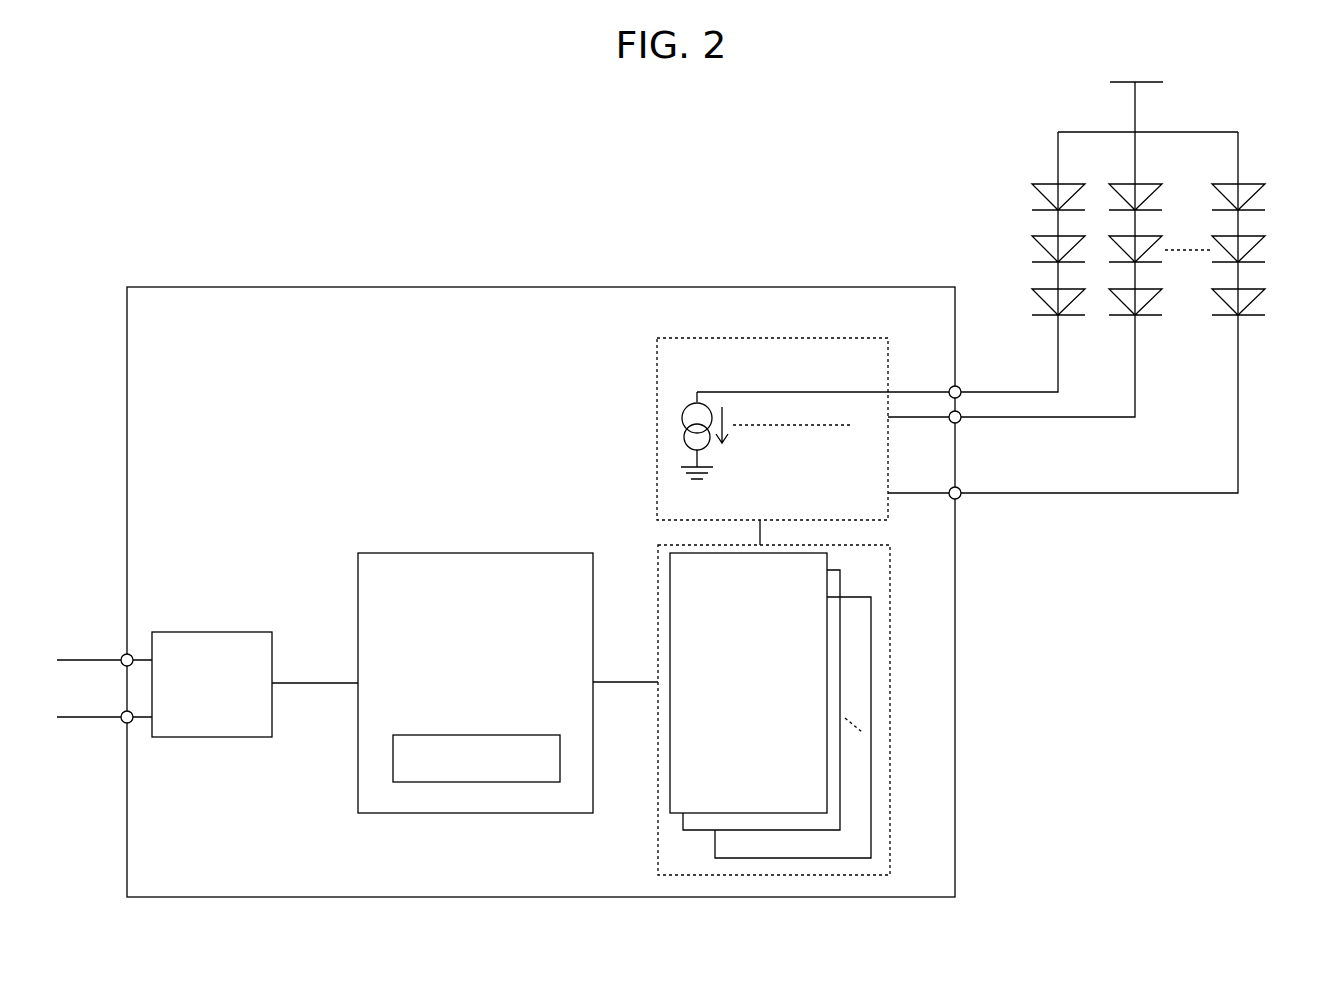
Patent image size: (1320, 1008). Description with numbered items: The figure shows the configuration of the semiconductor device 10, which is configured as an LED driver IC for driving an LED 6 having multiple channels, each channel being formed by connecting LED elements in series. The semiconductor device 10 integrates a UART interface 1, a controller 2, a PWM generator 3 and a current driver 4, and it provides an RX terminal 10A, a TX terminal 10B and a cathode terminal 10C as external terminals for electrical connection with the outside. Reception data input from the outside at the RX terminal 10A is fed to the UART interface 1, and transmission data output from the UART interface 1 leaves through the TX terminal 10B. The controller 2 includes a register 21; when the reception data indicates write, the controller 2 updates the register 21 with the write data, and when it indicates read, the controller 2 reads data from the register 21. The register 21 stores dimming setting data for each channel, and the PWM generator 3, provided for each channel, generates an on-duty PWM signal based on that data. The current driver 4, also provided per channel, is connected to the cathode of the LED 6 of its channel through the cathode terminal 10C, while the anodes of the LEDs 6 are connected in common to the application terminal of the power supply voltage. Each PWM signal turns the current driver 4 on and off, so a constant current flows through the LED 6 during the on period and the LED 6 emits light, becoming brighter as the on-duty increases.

The semiconductor device 10 is at (928, 286).
The RX terminal 10A is at (124, 655).
The TX terminal 10B is at (124, 722).
The cathode terminal 10C is at (975, 378).
The UART interface 1 is at (255, 631).
The controller 2 is at (477, 661).
The register 21 is at (535, 735).
The PWM generator 3 is at (888, 563).
The current driver 4 is at (657, 356).
The LED 6 is at (1268, 178).